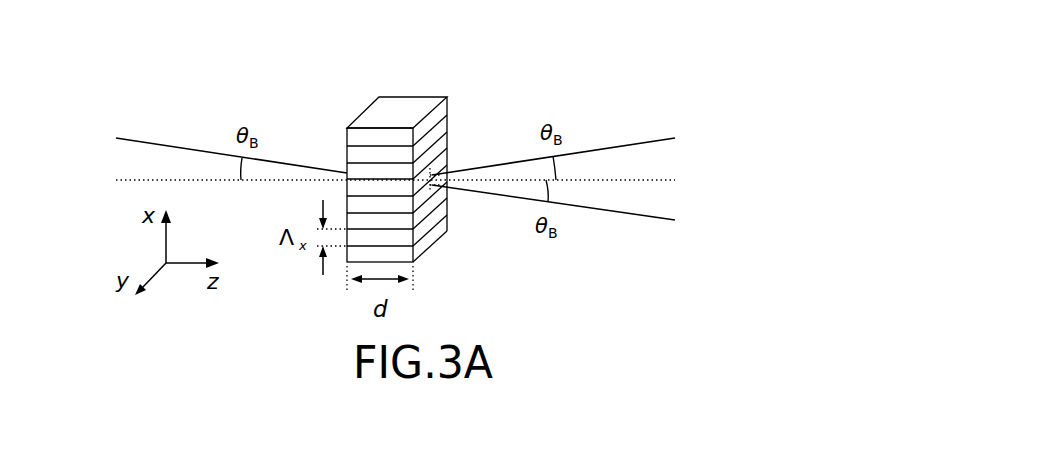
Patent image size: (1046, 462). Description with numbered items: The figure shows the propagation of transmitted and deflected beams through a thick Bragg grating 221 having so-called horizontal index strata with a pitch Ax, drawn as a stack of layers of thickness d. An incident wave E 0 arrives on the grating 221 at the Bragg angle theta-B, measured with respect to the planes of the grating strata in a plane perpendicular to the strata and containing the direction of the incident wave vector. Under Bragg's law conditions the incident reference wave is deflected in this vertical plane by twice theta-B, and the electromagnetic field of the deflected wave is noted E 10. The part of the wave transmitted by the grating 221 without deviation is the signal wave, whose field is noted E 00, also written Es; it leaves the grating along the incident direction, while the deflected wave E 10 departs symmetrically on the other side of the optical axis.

The thick Bragg grating 221 is at (410, 97).
The incident beam E0 0 is at (211, 145).
The diffracted beam E10 10 is at (581, 149).
The transmitted beam E00 (signal Es) 00 is at (606, 213).